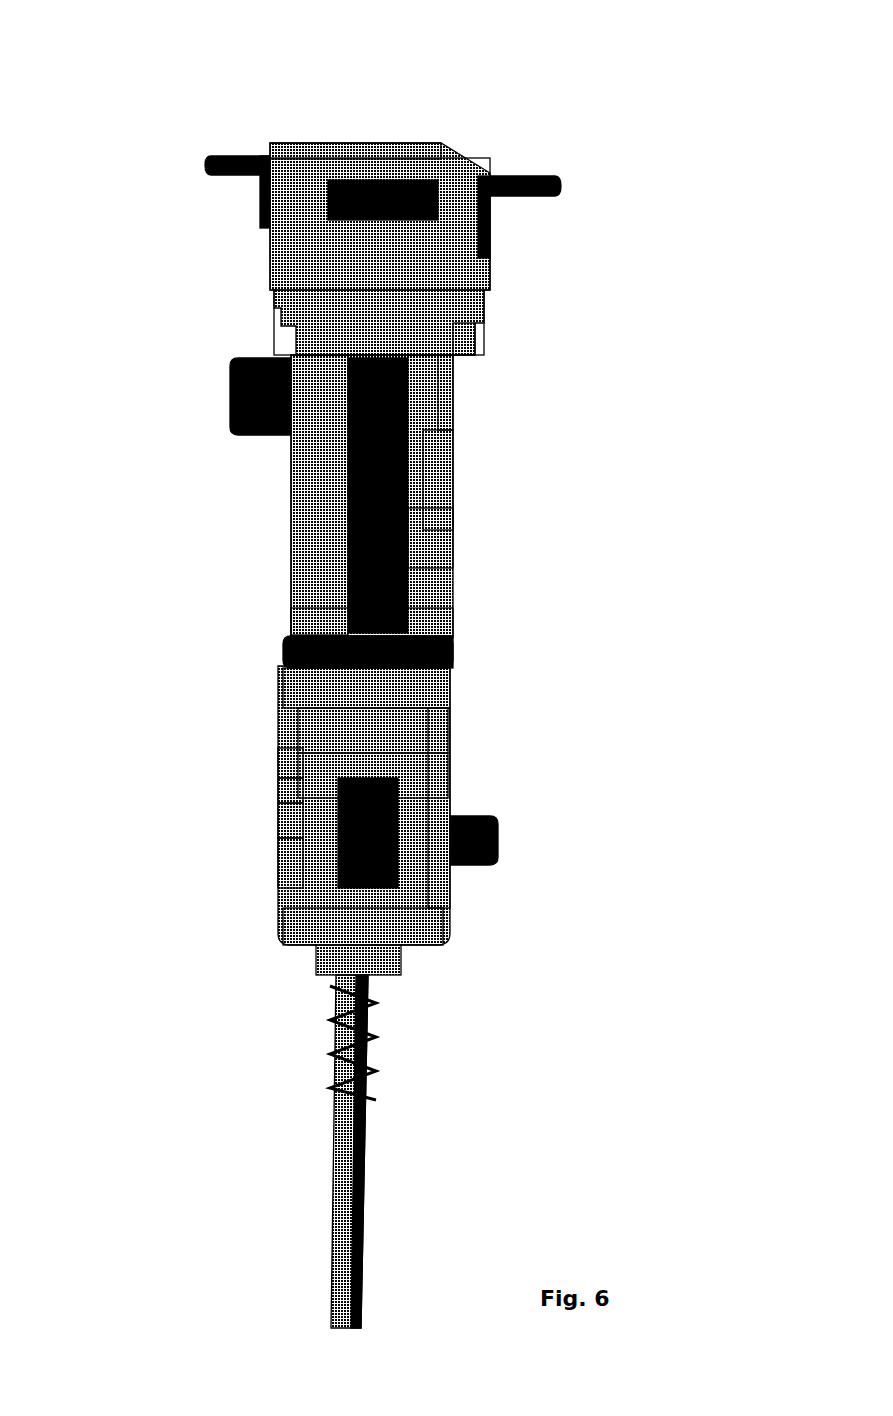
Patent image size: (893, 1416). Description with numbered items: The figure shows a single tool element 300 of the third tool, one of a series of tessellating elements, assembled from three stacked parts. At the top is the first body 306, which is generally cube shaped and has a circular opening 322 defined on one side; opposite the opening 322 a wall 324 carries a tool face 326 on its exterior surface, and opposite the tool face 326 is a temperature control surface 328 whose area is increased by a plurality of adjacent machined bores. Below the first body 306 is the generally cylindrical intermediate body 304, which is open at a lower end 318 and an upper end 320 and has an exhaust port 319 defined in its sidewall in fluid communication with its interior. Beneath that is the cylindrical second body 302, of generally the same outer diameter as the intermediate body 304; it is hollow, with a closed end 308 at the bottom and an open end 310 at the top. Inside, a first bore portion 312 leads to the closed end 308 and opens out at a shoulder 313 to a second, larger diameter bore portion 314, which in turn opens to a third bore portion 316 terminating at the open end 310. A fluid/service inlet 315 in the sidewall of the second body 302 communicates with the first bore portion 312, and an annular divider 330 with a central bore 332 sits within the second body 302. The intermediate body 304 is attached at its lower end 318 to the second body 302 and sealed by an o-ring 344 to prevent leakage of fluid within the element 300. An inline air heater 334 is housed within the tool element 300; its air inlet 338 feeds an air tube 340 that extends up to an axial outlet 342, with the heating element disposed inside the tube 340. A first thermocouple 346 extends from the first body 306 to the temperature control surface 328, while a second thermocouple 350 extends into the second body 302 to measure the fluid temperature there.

The tool element 300 is at (656, 460).
The second body 302 is at (278, 818).
The intermediate body 304 is at (283, 531).
The first body 306 is at (262, 252).
The closed end 308 is at (275, 929).
The open end 310 is at (283, 642).
The first bore portion 312 is at (273, 862).
The shoulder 313 is at (272, 784).
The second bore portion 314 is at (272, 757).
The fluid/service inlet 315 is at (490, 826).
The third bore portion 316 is at (440, 665).
The lower end 318 is at (440, 608).
The exhaust port 319 is at (222, 402).
The upper end 320 is at (447, 333).
The circular opening 322 is at (272, 306).
The wall 324 is at (265, 143).
The tool face 326 is at (392, 135).
The temperature control surface 328 is at (516, 170).
The divider 330 is at (440, 745).
The central bore 332 is at (440, 788).
The inline air heater 334 is at (505, 912).
The air inlet 338 is at (408, 943).
The air tube 340 is at (447, 482).
The axial outlet 342 is at (482, 264).
The o-ring 344 is at (283, 613).
The first thermocouple 346 is at (447, 383).
The second thermocouple 350 is at (328, 1115).